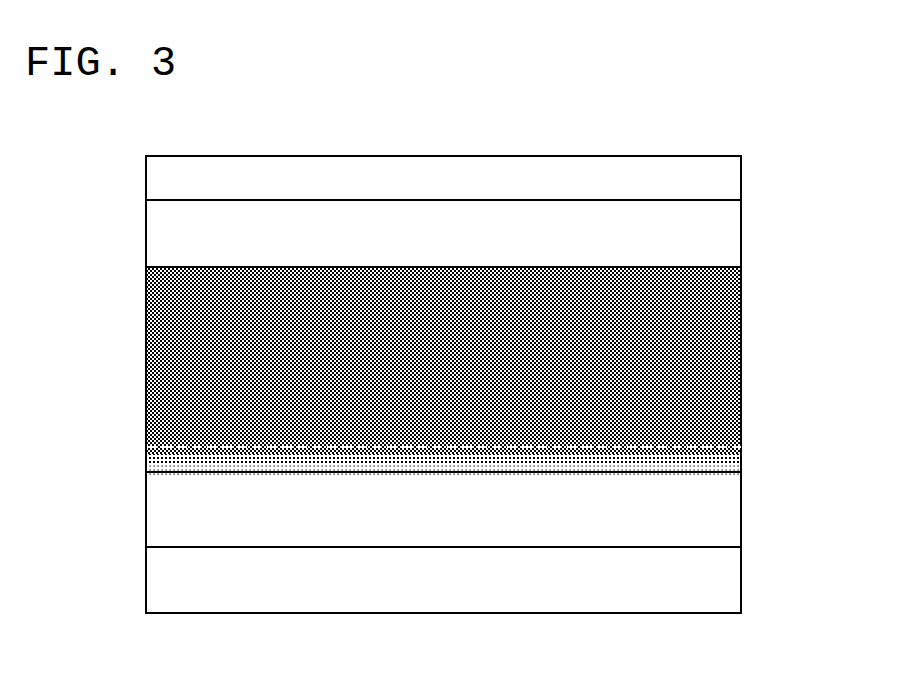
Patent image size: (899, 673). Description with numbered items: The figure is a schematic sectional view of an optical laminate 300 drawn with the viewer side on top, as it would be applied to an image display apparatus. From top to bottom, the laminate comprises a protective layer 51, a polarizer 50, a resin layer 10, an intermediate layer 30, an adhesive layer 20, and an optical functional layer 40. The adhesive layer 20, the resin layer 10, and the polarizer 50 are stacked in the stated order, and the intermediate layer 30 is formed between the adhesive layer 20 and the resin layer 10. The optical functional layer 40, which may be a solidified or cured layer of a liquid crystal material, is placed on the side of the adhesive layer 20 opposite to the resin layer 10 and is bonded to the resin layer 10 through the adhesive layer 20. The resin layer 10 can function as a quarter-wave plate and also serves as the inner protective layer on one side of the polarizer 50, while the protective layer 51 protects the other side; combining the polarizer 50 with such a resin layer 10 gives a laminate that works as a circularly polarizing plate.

The optical laminate 300 is at (799, 81).
The protective layer 51 is at (722, 193).
The polarizer 50 is at (715, 243).
The resin layer 10 is at (718, 347).
The intermediate layer 30 is at (723, 462).
The adhesive layer 20 is at (725, 512).
The optical functional layer 40 is at (722, 572).